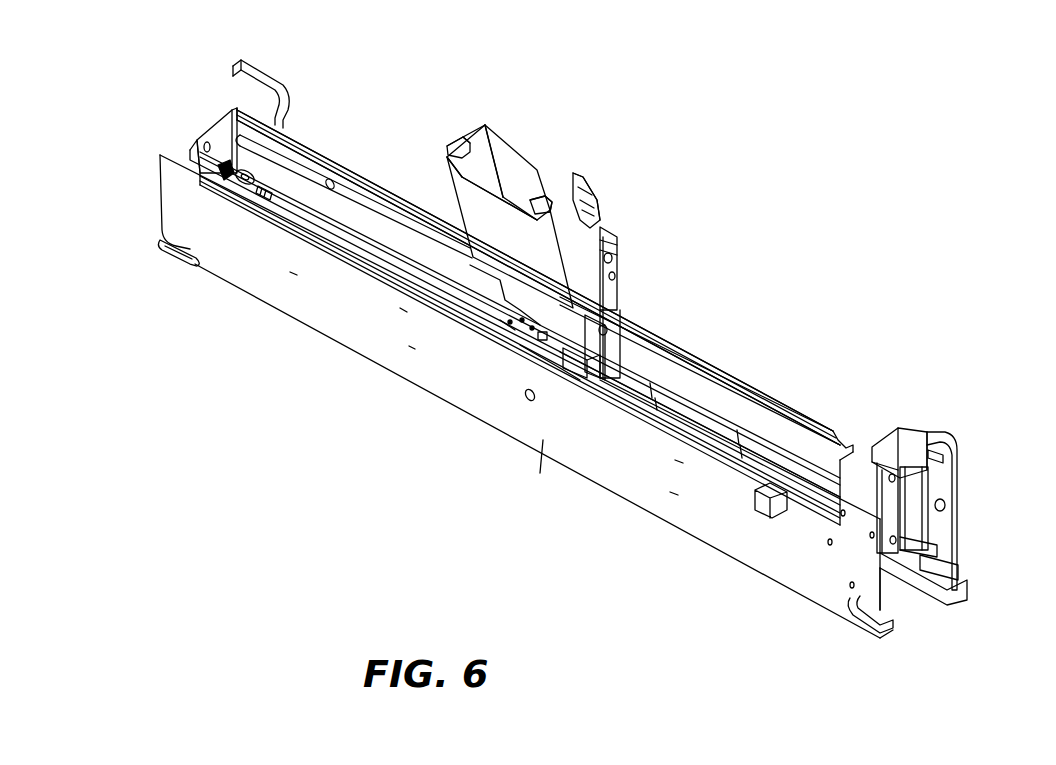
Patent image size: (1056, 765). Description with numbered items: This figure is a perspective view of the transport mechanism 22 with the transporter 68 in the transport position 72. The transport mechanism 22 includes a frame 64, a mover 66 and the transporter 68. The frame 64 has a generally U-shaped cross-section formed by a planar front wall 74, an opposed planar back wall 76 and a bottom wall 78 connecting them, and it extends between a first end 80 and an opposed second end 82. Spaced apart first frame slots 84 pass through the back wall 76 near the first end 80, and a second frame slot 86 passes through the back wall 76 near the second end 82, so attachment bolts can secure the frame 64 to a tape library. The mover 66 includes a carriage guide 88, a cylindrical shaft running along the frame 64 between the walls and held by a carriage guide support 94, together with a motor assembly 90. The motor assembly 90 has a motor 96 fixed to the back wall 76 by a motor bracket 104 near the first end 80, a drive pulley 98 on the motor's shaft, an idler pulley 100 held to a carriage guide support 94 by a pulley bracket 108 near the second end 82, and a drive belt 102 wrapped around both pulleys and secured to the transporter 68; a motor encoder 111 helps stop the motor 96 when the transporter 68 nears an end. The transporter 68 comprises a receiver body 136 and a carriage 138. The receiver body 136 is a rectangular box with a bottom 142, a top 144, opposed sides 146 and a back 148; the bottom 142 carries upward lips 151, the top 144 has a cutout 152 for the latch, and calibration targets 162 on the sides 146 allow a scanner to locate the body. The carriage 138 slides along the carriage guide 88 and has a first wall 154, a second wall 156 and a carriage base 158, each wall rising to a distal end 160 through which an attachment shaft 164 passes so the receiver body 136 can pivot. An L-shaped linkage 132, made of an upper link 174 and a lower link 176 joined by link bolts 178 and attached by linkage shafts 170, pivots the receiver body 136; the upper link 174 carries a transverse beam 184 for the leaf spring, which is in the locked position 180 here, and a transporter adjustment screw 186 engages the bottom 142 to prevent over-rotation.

The transport mechanism 22 is at (775, 193).
The frame 64 is at (727, 373).
The mover 66 is at (913, 432).
The transporter 68 is at (611, 180).
The transport position 72 is at (600, 220).
The front wall 74 is at (740, 537).
The back wall 76 is at (780, 402).
The bottom wall 78 is at (907, 610).
The first end 80 is at (963, 578).
The second end 82 is at (155, 200).
The first frame slots 84 is at (947, 448).
The second frame slot 86 is at (263, 93).
The carriage guide 88 is at (348, 212).
The motor assembly 90 is at (919, 492).
The carriage guide support 94 is at (207, 130).
The motor 96 is at (920, 508).
The drive pulley 98 is at (922, 583).
The idler pulley 100 is at (257, 172).
The drive belt 102 is at (297, 202).
The motor bracket 104 is at (923, 545).
The pulley bracket 108 is at (195, 155).
The motor encoder 111 is at (927, 433).
The linkage 132 is at (625, 300).
The receiver body 136 is at (452, 192).
The carriage 138 is at (622, 308).
The bottom 142 is at (522, 257).
The top 144 is at (517, 170).
The sides 146 is at (452, 145).
The back 148 is at (405, 372).
The lips 151 is at (450, 150).
The cutout 152 is at (530, 207).
The first wall 154 is at (618, 322).
The second wall 156 is at (500, 176).
The carriage base 158 is at (478, 340).
The distal end 160 is at (620, 280).
The calibration targets 162 is at (475, 130).
The attachment shaft 164 is at (613, 266).
The linkage shafts 170 is at (615, 258).
The upper link 174 is at (530, 360).
The lower link 176 is at (565, 382).
The link bolts 178 is at (542, 385).
The locked position 180 is at (601, 156).
The transverse beam 184 is at (610, 240).
The transporter adjustment screw 186 is at (508, 340).